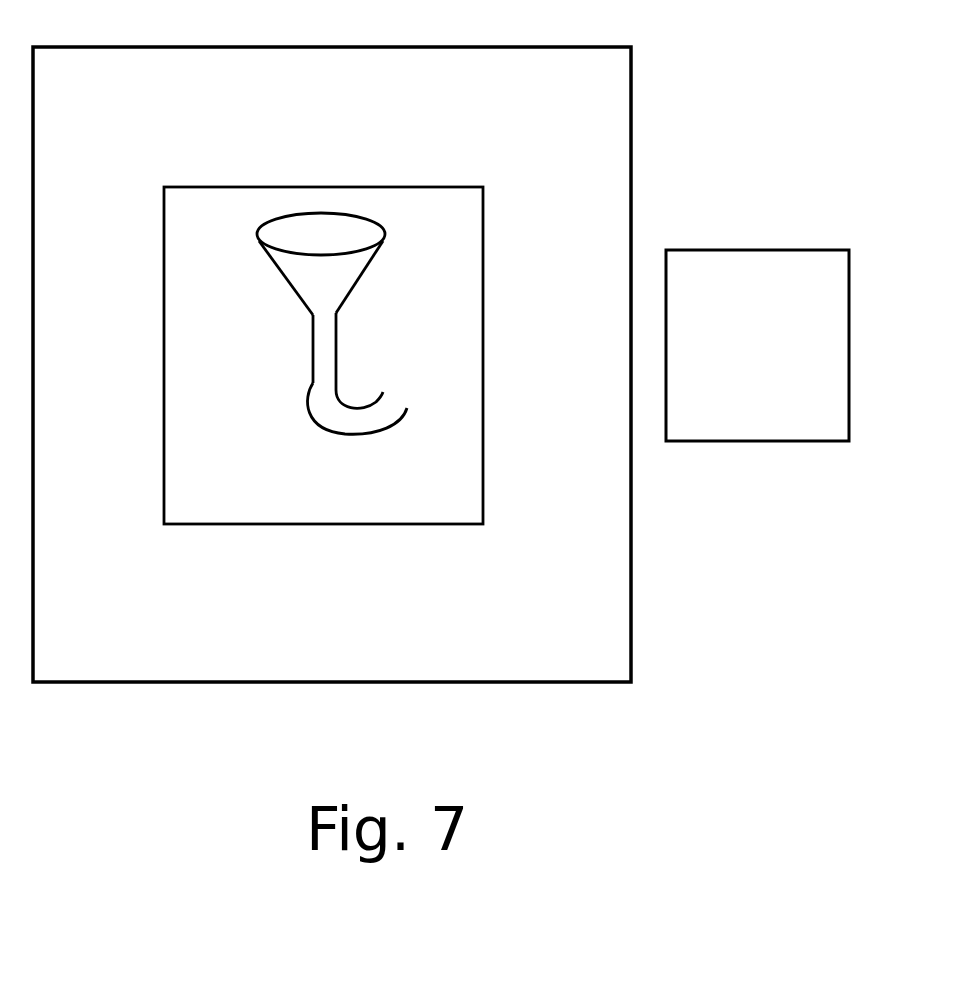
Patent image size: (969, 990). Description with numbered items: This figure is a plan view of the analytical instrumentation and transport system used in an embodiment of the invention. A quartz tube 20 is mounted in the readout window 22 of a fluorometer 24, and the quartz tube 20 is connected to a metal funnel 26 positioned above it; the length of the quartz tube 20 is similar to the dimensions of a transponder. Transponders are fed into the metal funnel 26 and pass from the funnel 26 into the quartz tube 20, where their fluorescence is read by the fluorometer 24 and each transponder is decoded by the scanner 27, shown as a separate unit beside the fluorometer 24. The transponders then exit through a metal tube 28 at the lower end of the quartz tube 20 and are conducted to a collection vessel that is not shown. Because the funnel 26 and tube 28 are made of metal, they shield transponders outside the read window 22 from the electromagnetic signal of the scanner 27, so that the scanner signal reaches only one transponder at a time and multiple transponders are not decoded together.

The quartz tube 20 is at (306, 301).
The readout window 22 is at (368, 536).
The fluorometer 24 is at (647, 92).
The metal funnel 26 is at (321, 219).
The scanner 27 is at (765, 236).
The metal tube 28 is at (302, 435).